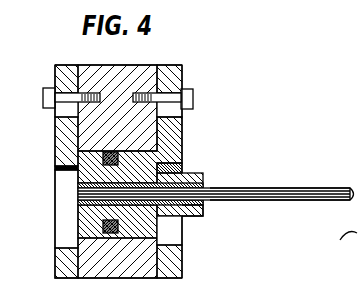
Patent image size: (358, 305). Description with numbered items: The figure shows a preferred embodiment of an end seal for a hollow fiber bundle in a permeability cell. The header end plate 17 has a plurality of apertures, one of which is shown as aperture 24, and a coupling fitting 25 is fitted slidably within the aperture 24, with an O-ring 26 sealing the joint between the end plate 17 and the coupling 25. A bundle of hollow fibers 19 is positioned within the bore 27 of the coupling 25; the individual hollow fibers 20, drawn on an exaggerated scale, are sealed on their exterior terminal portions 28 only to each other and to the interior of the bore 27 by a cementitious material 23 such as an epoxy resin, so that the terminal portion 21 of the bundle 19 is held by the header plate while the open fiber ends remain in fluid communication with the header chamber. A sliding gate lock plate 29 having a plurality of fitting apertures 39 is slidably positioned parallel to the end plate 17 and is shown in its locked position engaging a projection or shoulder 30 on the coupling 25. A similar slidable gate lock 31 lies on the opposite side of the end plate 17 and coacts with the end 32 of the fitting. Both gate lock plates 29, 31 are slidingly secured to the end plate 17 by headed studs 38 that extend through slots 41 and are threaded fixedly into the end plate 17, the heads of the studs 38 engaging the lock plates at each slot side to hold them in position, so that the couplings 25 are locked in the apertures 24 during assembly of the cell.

The header end plate 17 is at (134, 73).
The bundle of hollow fibers 19 is at (257, 187).
The hollow fibers 20 is at (309, 186).
The terminal portion 21 is at (186, 191).
The cementitious material 23 is at (78, 188).
The aperture 24 is at (131, 166).
The coupling fitting 25 is at (98, 203).
The O-ring 26 is at (100, 155).
The bore 27 is at (203, 209).
The exterior terminal portions 28 is at (79, 237).
The sliding gate lock plate 29 is at (182, 74).
The projection or shoulder 30 is at (172, 161).
The slidable gate lock 31 is at (64, 77).
The end of the fitting 32 is at (78, 178).
The headed studs 38 is at (193, 99).
The fitting apertures 39 is at (173, 229).
The slots 41 is at (75, 104).